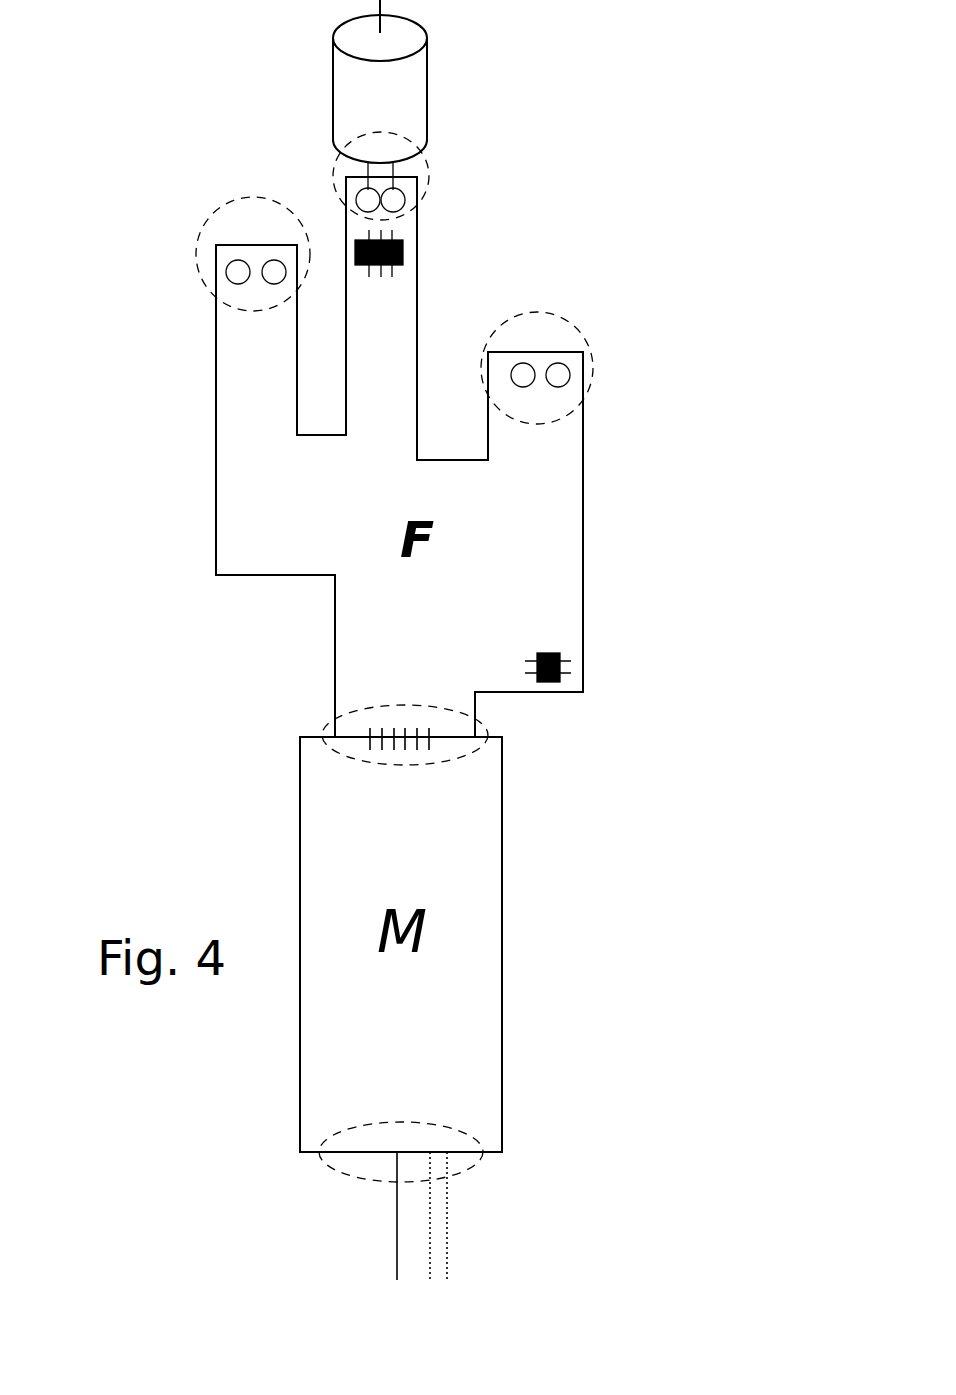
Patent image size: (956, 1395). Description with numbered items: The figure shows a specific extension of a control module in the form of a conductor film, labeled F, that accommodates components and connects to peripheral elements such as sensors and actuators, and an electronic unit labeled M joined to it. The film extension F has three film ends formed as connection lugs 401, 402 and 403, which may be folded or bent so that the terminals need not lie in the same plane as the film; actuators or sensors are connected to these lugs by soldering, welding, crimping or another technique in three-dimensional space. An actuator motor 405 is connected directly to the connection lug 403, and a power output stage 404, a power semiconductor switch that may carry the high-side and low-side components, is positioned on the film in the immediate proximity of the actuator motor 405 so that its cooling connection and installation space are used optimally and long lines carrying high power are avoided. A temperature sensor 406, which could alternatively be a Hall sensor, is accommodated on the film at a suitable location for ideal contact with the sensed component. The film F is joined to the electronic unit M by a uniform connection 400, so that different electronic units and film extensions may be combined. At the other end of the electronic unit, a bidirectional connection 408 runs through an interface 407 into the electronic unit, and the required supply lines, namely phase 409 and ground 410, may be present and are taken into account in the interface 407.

The connection between film and electronic unit 400 is at (477, 727).
The connection lug 401 is at (592, 360).
The connection lug 402 is at (200, 232).
The connection lug 403 is at (428, 163).
The power output stage 404 is at (403, 247).
The actuator motor 405 is at (415, 67).
The temperature sensor 406 is at (560, 653).
The interface 407 is at (443, 1130).
The bidirectional connection 408 is at (397, 1205).
The phase 409 is at (447, 1213).
The ground 410 is at (430, 1247).